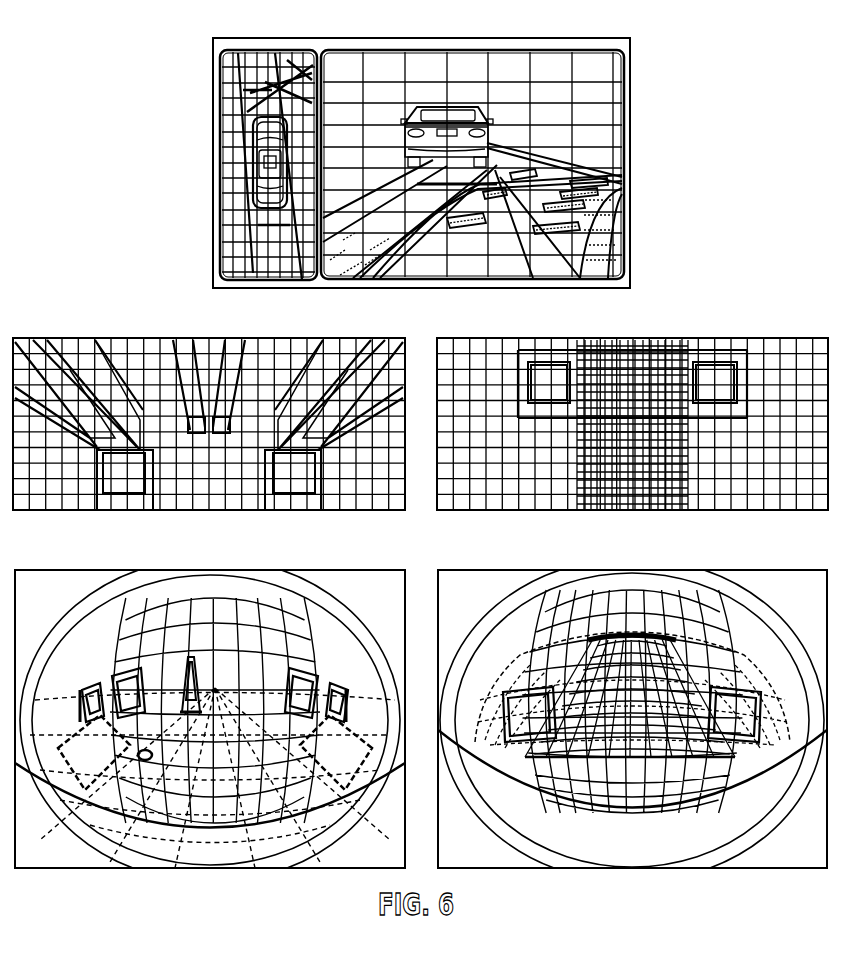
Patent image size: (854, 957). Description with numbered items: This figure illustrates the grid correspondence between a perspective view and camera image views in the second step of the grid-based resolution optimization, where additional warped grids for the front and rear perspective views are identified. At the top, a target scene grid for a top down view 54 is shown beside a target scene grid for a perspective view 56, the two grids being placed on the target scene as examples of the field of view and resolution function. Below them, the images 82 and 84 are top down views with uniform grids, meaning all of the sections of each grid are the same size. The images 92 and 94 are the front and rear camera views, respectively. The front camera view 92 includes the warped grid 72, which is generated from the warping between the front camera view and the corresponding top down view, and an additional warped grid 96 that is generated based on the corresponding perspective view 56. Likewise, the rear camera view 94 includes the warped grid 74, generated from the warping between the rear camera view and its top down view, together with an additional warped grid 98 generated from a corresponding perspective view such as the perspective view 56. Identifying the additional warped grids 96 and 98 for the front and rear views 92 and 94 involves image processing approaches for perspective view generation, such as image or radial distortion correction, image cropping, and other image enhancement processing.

The target scene grid for a top down view 54 is at (218, 103).
The perspective view 56 is at (553, 50).
The warped grid 72 is at (70, 723).
The warped grid 74 is at (772, 690).
The image 82 is at (63, 338).
The image 84 is at (778, 338).
The front camera view 92 is at (342, 570).
The rear camera view 94 is at (732, 570).
The additional warped grid 96 is at (213, 598).
The additional warped grid 98 is at (632, 592).